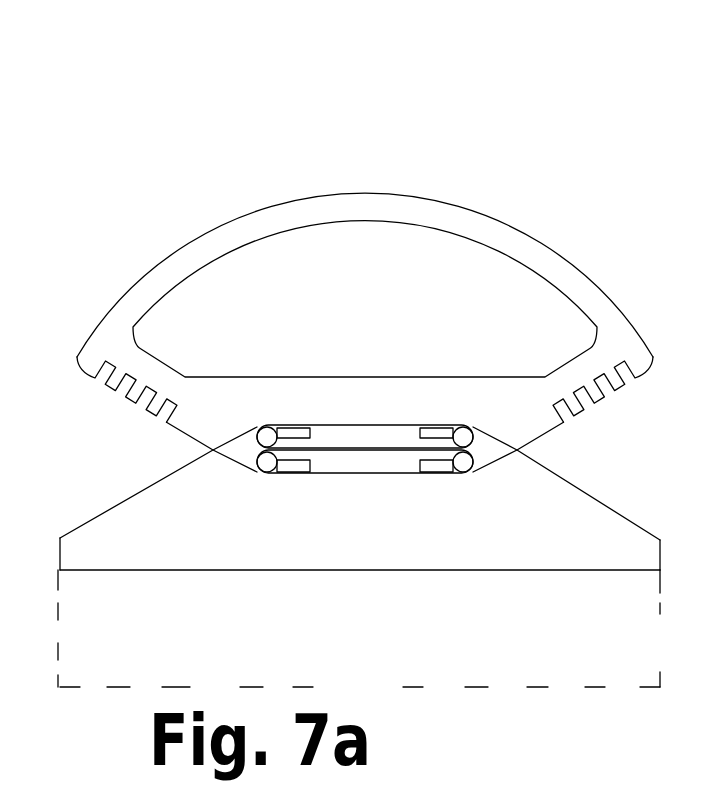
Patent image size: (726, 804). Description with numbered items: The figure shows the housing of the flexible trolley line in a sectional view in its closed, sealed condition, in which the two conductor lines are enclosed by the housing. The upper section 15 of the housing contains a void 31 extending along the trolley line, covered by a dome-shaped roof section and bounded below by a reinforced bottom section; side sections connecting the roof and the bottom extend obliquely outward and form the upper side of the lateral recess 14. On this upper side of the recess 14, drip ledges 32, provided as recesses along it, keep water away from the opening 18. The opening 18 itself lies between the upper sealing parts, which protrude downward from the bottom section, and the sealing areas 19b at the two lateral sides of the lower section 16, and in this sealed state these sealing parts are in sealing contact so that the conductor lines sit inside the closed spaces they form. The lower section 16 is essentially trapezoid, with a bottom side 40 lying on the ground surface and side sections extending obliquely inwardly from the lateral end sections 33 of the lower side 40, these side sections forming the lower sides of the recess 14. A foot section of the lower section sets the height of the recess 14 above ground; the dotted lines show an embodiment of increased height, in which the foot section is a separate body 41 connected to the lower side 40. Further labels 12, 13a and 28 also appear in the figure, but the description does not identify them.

The pivot bearing 12 is at (462, 437).
The first arm 13a is at (214, 440).
The recess 14 is at (77, 437).
The upper section 15 is at (436, 227).
The lower section 16 is at (497, 537).
The opening 18 is at (517, 450).
The sealing area 19b is at (213, 463).
The base plate 28 is at (307, 537).
The void 31 is at (502, 303).
The drip ledge 32 is at (608, 400).
The lateral end section 33 is at (105, 555).
The bottom side 40 is at (373, 572).
The separate body 41 is at (447, 667).